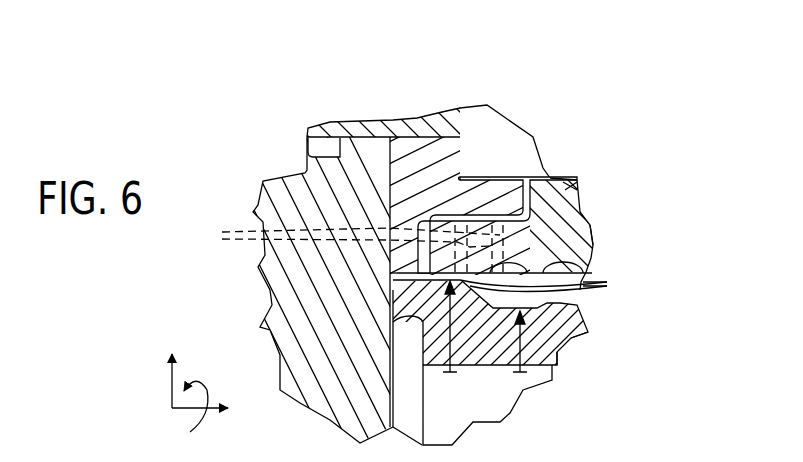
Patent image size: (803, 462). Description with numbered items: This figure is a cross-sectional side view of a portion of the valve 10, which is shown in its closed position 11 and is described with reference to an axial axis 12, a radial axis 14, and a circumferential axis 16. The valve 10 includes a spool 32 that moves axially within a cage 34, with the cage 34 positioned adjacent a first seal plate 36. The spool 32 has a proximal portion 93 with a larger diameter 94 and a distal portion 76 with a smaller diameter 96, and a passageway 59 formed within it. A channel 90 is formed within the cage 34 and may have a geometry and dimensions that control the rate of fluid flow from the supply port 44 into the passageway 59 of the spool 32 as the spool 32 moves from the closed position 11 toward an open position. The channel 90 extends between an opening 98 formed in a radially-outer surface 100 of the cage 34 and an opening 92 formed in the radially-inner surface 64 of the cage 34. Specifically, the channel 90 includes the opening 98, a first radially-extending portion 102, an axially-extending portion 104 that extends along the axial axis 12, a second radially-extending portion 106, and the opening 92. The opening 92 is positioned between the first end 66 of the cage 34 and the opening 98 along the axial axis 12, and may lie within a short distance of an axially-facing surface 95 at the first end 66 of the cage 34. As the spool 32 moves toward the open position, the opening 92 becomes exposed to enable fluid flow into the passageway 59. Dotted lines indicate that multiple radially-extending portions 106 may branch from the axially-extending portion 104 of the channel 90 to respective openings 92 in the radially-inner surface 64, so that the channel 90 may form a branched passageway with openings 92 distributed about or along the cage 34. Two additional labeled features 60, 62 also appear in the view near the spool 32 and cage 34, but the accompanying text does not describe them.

The valve 10 is at (622, 118).
The closed position 11 is at (622, 80).
The axial axis 12 is at (185, 410).
The radial axis 14 is at (170, 380).
The circumferential axis 16 is at (202, 398).
The spool 32 is at (562, 338).
The cage 34 is at (420, 152).
The first seal plate 36 is at (375, 153).
The supply port 44 is at (565, 183).
The passageway 59 is at (497, 403).
The channel 60 is at (422, 227).
The gap 62 is at (420, 278).
The radially-inner surface 64 is at (590, 238).
The first end 66 is at (428, 178).
The distal portion 76 is at (563, 310).
The channel 90 is at (473, 216).
The opening 92 is at (420, 287).
The proximal portion 93 is at (422, 292).
The larger diameter 94 is at (463, 290).
The axially-facing surface 95 is at (420, 147).
The smaller diameter 96 is at (557, 352).
The opening 98 is at (545, 178).
The radially-outer surface 100 is at (483, 177).
The first radially-extending portion 102 is at (573, 185).
The axially-extending portion 104 is at (478, 200).
The second radially-extending portion 106 is at (343, 249).